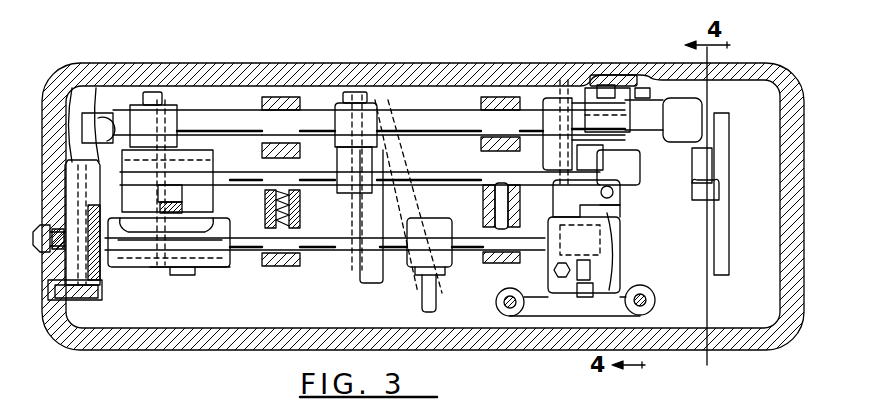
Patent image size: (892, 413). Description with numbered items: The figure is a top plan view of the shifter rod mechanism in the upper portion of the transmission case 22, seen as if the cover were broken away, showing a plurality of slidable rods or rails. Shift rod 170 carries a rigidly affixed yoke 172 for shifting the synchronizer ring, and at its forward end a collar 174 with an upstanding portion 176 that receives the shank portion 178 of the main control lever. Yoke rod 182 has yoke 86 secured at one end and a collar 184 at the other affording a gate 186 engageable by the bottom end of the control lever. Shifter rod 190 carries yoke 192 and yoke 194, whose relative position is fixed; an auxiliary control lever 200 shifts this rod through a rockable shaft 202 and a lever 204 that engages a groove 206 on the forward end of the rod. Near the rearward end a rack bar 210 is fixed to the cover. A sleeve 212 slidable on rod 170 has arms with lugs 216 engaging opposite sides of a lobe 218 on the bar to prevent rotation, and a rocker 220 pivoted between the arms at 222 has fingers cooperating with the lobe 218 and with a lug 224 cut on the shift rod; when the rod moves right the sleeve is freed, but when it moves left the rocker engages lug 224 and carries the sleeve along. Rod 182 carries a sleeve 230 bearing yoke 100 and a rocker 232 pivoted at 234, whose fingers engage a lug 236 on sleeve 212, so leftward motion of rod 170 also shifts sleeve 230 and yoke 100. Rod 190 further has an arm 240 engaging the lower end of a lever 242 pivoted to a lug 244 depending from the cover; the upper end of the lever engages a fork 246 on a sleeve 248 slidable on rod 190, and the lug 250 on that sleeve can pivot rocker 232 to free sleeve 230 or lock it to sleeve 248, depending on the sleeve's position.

The housing 22 is at (128, 353).
The yoke 86 is at (725, 122).
The yoke 100 is at (567, 83).
The shift rod 170 is at (300, 282).
The yoke 172 is at (427, 290).
The collar 174 is at (182, 273).
The upstanding portion 176 is at (187, 228).
The shank portion 178 is at (195, 213).
The yoke rod 182 is at (380, 185).
The collar 184 is at (208, 160).
The gate 186 is at (182, 193).
The shifter rod 190 is at (448, 113).
The yoke 192 is at (372, 88).
The yoke 194 is at (188, 105).
The auxiliary control lever 200 is at (92, 298).
The rockable shaft 202 is at (103, 280).
The lever 204 is at (72, 137).
The groove 206 is at (97, 137).
The rack bar 210 is at (655, 293).
The sleeve 212 is at (620, 235).
The lugs 216 is at (587, 295).
The lobe 218 is at (562, 295).
The rocker 220 is at (617, 270).
The pivot 222 is at (552, 268).
The lug 224 is at (615, 268).
The sleeve 230 is at (638, 183).
The rocker 232 is at (625, 227).
The pivot 234 is at (617, 198).
The lug 236 is at (553, 222).
The arm 240 is at (652, 125).
The lever 242 is at (597, 100).
The lug 244 is at (614, 76).
The fork 246 is at (590, 100).
The sleeve 248 is at (550, 127).
The lug 250 is at (525, 188).